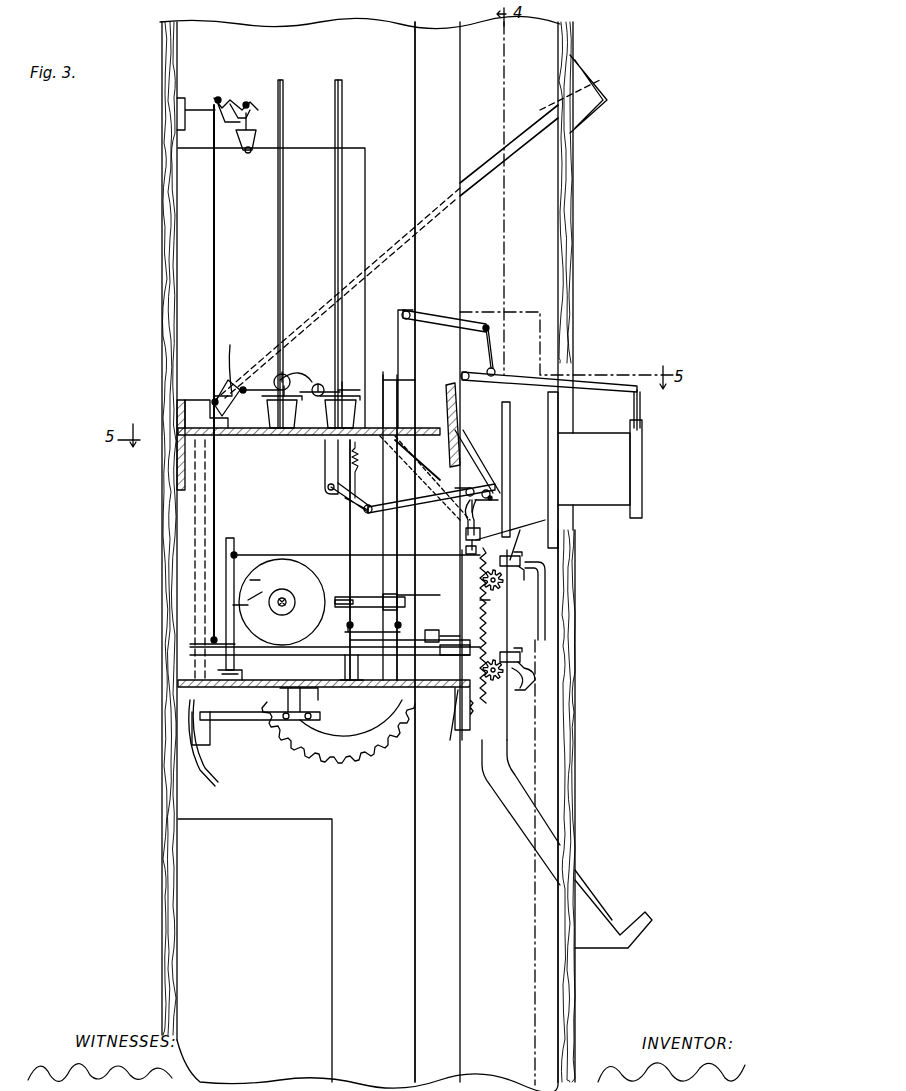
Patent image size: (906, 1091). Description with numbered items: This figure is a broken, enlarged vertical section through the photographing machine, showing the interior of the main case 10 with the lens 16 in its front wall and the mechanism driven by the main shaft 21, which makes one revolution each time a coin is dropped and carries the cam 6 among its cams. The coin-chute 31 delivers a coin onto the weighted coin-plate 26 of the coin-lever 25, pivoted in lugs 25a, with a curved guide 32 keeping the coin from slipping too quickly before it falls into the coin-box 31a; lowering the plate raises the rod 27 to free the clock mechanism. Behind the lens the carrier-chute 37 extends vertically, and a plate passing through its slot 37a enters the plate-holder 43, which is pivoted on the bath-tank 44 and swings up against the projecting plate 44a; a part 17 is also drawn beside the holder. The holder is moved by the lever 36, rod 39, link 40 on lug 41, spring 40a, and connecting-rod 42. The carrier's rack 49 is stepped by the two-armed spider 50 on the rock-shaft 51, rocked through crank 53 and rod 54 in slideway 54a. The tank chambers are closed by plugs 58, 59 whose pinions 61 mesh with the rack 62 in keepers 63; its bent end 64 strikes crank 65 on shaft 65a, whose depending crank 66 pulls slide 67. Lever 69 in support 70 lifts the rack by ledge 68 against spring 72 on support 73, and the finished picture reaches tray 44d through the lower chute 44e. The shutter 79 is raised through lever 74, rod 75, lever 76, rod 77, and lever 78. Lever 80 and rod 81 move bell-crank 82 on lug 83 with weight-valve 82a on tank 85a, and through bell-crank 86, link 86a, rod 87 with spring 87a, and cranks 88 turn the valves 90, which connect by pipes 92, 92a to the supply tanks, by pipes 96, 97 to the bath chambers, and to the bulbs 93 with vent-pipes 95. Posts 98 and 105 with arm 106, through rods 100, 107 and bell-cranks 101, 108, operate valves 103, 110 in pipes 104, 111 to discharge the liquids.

The cam 6 is at (282, 602).
The case 10 is at (560, 600).
The lens 16 is at (600, 492).
The plate 17 is at (537, 470).
The main shaft 21 is at (283, 598).
The coin-lever 25 is at (242, 712).
The lugs 25a is at (300, 720).
The coin-plate 26 is at (212, 740).
The rod 27 is at (335, 698).
The coin-chute 31 is at (592, 66).
The coin-box 31a is at (255, 950).
The curved guide 32 is at (206, 751).
The lever 36 is at (432, 630).
The carrier-chute 37 is at (430, 552).
The slot 37a is at (460, 408).
The rod 39 is at (352, 590).
The link 40 is at (345, 498).
The spring 40a is at (369, 470).
The lug 41 is at (326, 468).
The connecting-rod 42 is at (440, 490).
The plate-holder 43 is at (470, 435).
The bath-tank 44 is at (481, 534).
The projecting plate 44a is at (540, 402).
The tray 44d is at (645, 912).
The pipe 44e is at (517, 783).
The rack 49 is at (413, 312).
The two-armed spider 50 is at (402, 392).
The rock-shaft 51 is at (378, 538).
The crank 53 is at (402, 593).
The rod 54 is at (370, 592).
The slideway 54a is at (337, 598).
The plug or valve 58 is at (504, 580).
The plug or valve 59 is at (493, 680).
The pinion 61 is at (510, 700).
The rack 62 is at (474, 636).
The keepers 63 is at (510, 560).
The bent upper end of rack 64 is at (460, 516).
The crank 65 is at (460, 481).
The rock-shaft 65a is at (485, 482).
The depending crank 66 is at (489, 512).
The slide 67 is at (495, 499).
The projecting ledge 68 is at (453, 622).
The lever 69 is at (448, 655).
The support 70 is at (351, 667).
The spring 72 is at (475, 712).
The support 73 is at (443, 718).
The lever 74 is at (407, 628).
The vertical rod 75 is at (400, 580).
The lever 76 is at (430, 318).
The rod 77 is at (495, 350).
The lever 78 is at (516, 376).
The shutter 79 is at (640, 405).
The lever 80 is at (248, 630).
The rod 81 is at (214, 500).
The bell-crank 82 is at (232, 100).
The weight-valve 82a is at (256, 128).
The lug 83 is at (197, 108).
The tank 85a is at (322, 222).
The bell-crank 86 is at (229, 366).
The link 86a is at (262, 382).
The rod 87 is at (300, 392).
The spring 87a is at (356, 376).
The cranks 88 is at (346, 380).
The valves 90 is at (311, 412).
The pipe 92 is at (243, 427).
The pipe 92a is at (320, 381).
The bulbs 93 is at (330, 345).
The vent-pipes 95 is at (338, 262).
The pipe 96 is at (410, 478).
The pipe 97 is at (407, 530).
The vertical post 98 is at (235, 548).
The rod 100 is at (326, 550).
The bell-crank 101 is at (487, 547).
The valve 103 is at (525, 560).
The pipe 104 is at (545, 585).
The vertical post 105 is at (267, 572).
The projecting arm 106 is at (265, 591).
The rod 107 is at (308, 652).
The bell-crank 108 is at (501, 645).
The valve 110 is at (525, 655).
The pipe 111 is at (530, 668).